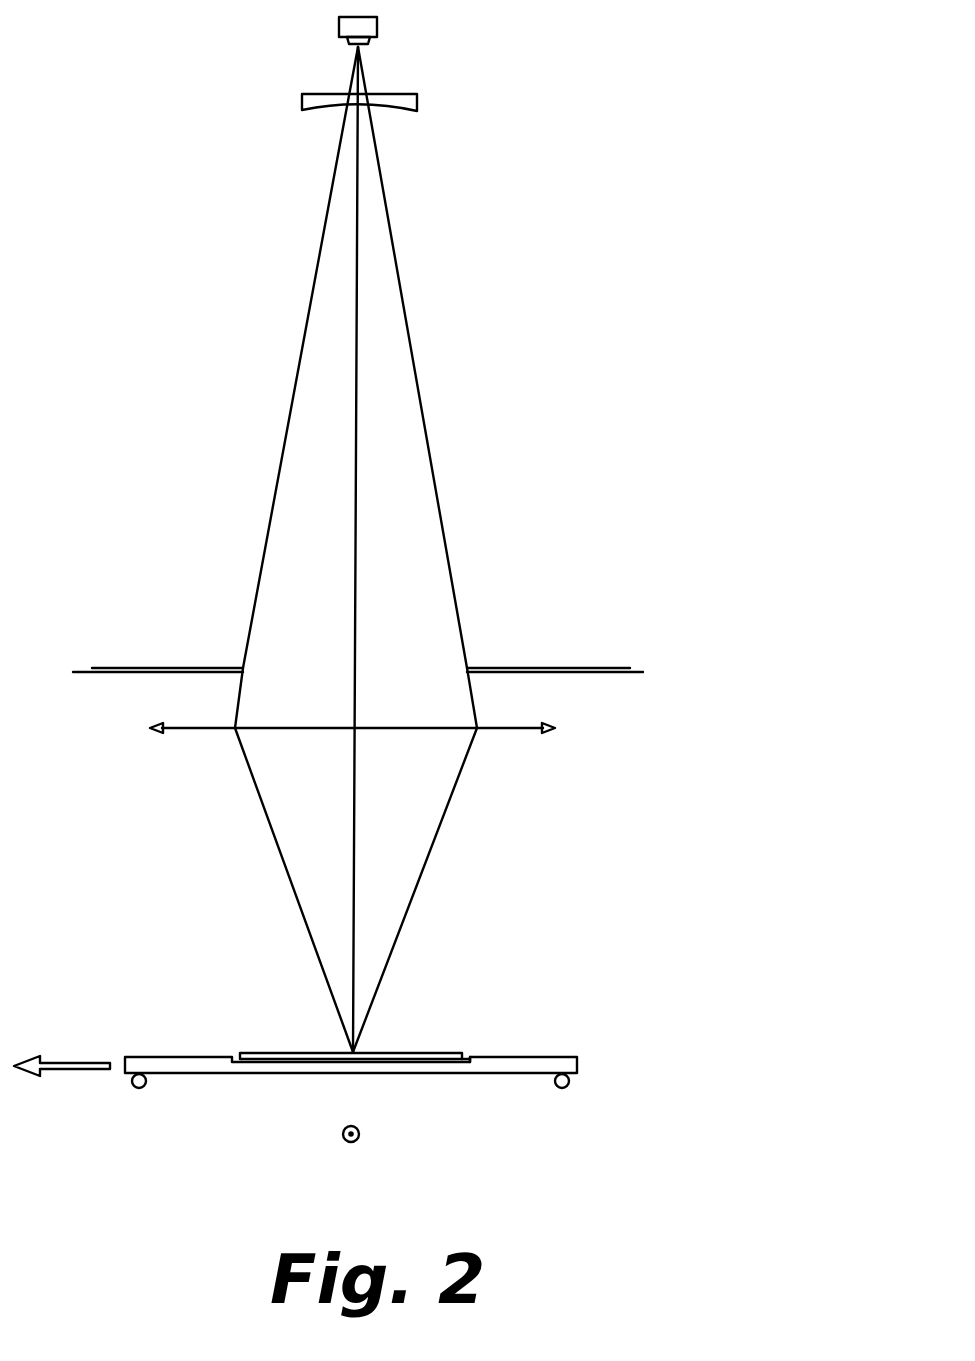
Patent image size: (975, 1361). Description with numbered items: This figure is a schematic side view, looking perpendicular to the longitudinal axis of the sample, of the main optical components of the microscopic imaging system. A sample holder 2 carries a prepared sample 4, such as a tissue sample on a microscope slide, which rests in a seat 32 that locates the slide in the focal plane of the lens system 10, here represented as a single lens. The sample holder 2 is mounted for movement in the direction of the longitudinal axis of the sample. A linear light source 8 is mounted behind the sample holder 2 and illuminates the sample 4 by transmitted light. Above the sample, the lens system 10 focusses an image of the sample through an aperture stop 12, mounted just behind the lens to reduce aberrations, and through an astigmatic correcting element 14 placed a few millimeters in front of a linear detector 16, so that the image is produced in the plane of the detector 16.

The sample holder 2 is at (515, 1070).
The sample 4 is at (412, 1052).
The light source 8 is at (342, 1141).
The lens system 10 is at (523, 732).
The aperture stop 12 is at (550, 668).
The correcting element 14 is at (417, 100).
The linear detector 16 is at (377, 26).
The seat 32 is at (468, 1058).